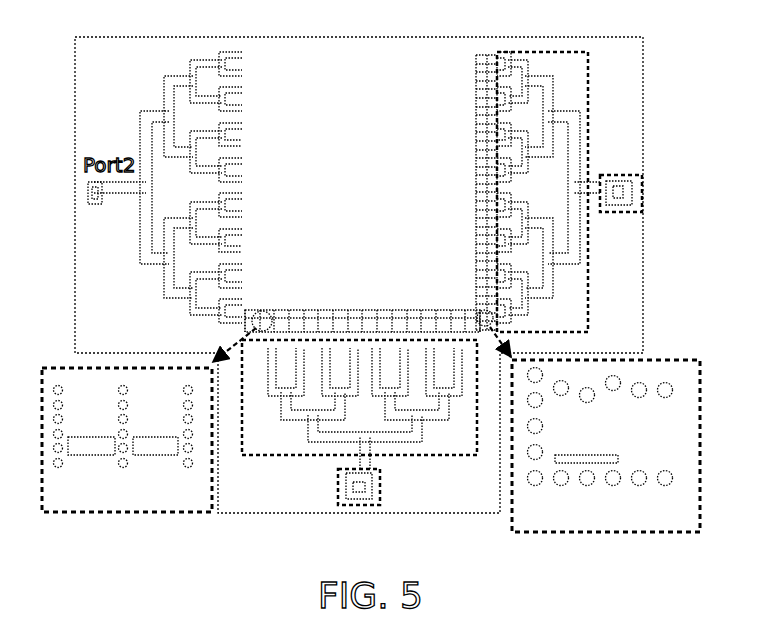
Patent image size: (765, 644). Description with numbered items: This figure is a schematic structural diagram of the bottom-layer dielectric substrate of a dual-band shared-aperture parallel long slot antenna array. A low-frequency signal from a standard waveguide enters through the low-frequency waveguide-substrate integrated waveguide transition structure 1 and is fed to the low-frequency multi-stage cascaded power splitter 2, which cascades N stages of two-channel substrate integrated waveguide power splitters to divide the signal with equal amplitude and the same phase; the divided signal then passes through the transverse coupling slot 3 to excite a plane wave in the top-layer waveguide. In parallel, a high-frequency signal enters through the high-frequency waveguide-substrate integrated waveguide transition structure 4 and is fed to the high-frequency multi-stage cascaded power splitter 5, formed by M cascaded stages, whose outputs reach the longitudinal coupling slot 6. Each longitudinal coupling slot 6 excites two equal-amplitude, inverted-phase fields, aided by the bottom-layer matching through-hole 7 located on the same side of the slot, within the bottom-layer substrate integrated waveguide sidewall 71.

The low-frequency waveguide-substrate integrated waveguide transition structure 1 is at (360, 506).
The low-frequency multi-stage cascaded power splitter 2 is at (477, 457).
The transverse coupling slot 3 is at (92, 457).
The high-frequency waveguide-substrate integrated waveguide transition structure 4 is at (645, 195).
The high-frequency multi-stage cascaded power splitter 5 is at (595, 327).
The longitudinal coupling slot 6 is at (588, 455).
The bottom-layer matching through-hole 7 is at (606, 446).
The bottom-layer substrate integrated waveguide sidewall 71 is at (590, 483).